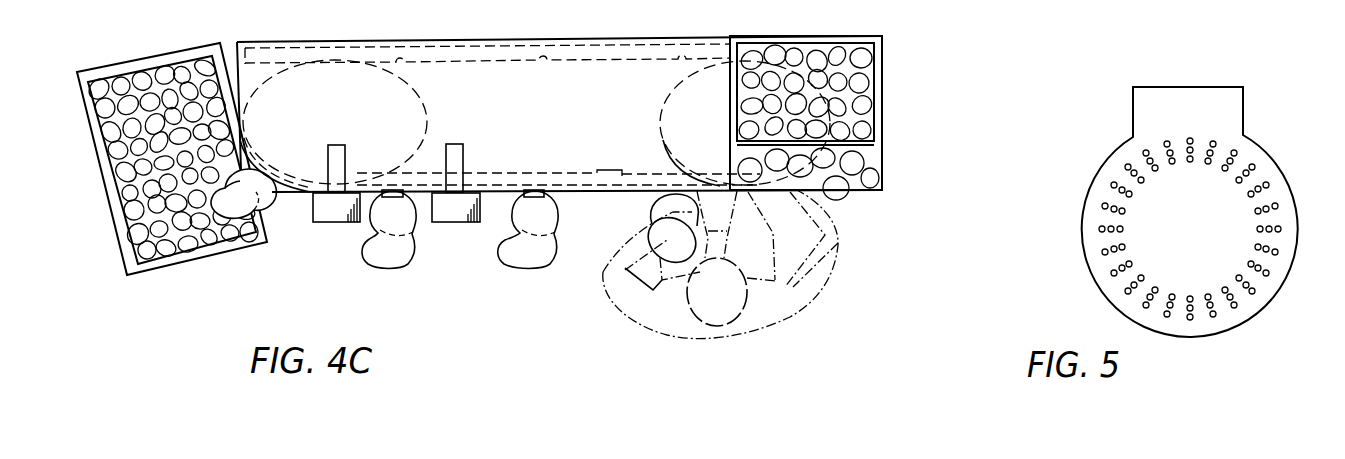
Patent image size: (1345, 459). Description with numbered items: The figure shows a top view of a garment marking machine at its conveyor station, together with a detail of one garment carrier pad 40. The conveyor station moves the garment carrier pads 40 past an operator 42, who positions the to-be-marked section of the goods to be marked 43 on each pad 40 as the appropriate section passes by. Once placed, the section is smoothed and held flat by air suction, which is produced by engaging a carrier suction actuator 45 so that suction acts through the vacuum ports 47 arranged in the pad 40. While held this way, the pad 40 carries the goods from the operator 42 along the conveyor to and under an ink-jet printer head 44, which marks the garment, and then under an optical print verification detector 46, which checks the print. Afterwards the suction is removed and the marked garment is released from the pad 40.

In FIG. 5, the garment carrier pad 40 is at (1092, 283).
In FIG. 4C, the operator 42 is at (813, 306).
In FIG. 4C, the goods to be marked 43 is at (862, 93).
In FIG. 4C, the ink-jet printer head 44 is at (458, 144).
In FIG. 4C, the carrier suction actuator 45 is at (600, 170).
In FIG. 4C, the optical print verification detector 46 is at (334, 145).
In FIG. 5, the vacuum ports 47 is at (1238, 306).